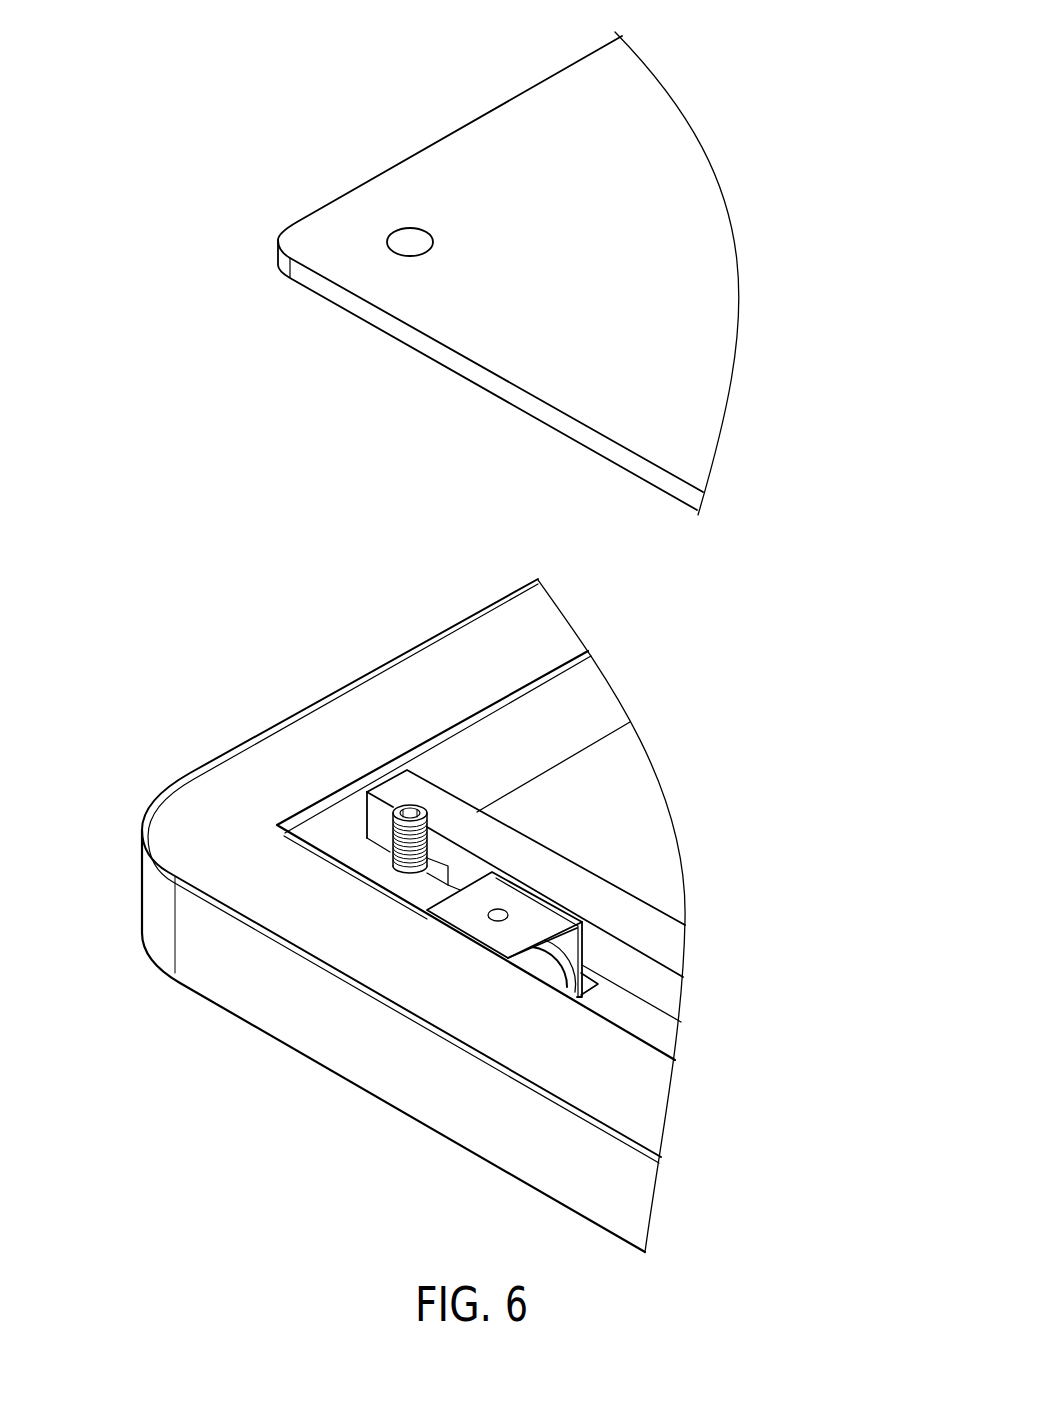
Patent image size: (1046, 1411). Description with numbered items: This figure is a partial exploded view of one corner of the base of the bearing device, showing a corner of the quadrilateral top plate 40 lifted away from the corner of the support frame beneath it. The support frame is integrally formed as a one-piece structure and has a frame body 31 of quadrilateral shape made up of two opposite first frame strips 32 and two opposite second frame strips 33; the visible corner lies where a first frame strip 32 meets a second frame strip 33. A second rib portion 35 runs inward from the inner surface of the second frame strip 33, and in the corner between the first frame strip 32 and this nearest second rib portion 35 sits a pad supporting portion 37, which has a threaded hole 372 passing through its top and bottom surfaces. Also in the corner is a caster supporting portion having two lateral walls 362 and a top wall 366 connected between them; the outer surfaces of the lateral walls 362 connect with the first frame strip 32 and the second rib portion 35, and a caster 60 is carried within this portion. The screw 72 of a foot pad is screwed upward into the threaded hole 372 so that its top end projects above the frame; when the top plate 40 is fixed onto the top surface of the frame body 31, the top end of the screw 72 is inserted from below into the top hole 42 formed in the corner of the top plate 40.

The frame body 31 is at (172, 780).
The first frame strip 32 is at (397, 1073).
The second frame strip 33 is at (480, 643).
The second rib portion 35 is at (445, 812).
The pad supporting portion 37 is at (363, 868).
The threaded hole 372 is at (371, 877).
The top plate 40 is at (512, 160).
The top hole 42 is at (407, 240).
The caster 60 is at (533, 965).
The screw 72 is at (366, 855).
The lateral wall 362 is at (570, 957).
The top wall 366 is at (538, 918).